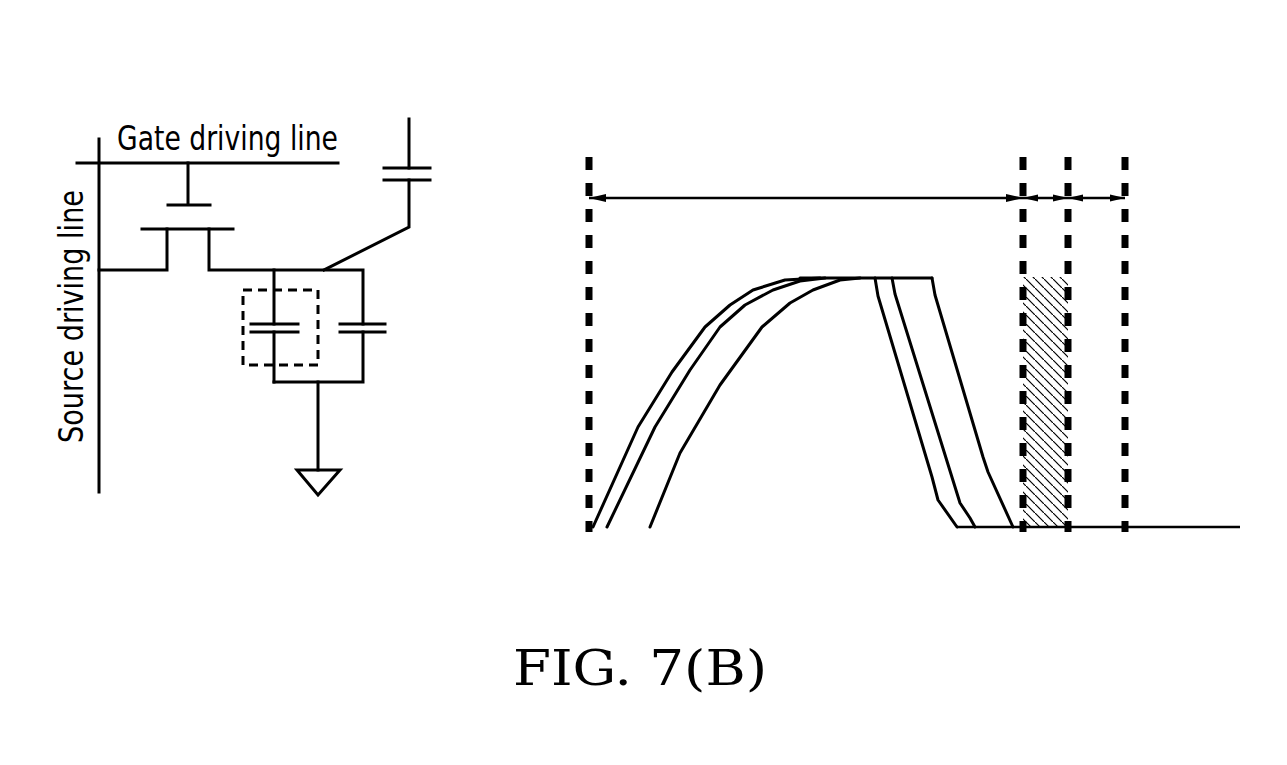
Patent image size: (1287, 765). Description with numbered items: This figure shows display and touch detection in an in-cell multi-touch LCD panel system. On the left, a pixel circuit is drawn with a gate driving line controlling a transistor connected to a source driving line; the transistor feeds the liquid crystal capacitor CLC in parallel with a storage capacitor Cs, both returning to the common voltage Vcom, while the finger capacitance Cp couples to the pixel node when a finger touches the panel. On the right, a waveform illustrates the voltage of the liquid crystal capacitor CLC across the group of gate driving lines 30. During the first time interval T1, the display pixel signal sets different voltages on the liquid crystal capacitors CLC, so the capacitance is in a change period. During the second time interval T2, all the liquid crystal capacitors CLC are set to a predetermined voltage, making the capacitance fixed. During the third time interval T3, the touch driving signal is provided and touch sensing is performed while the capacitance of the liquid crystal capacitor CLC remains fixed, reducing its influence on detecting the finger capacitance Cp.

The finger capacitance Cp is at (436, 178).
The storage capacitor Cs is at (387, 336).
The liquid crystal capacitor CLC is at (215, 327).
The common voltage Vcom is at (363, 478).
The first time interval T1 is at (806, 195).
The second time interval T2 is at (1022, 171).
The third time interval T3 is at (1093, 165).
The first group of gate driving lines 30 is at (650, 530).